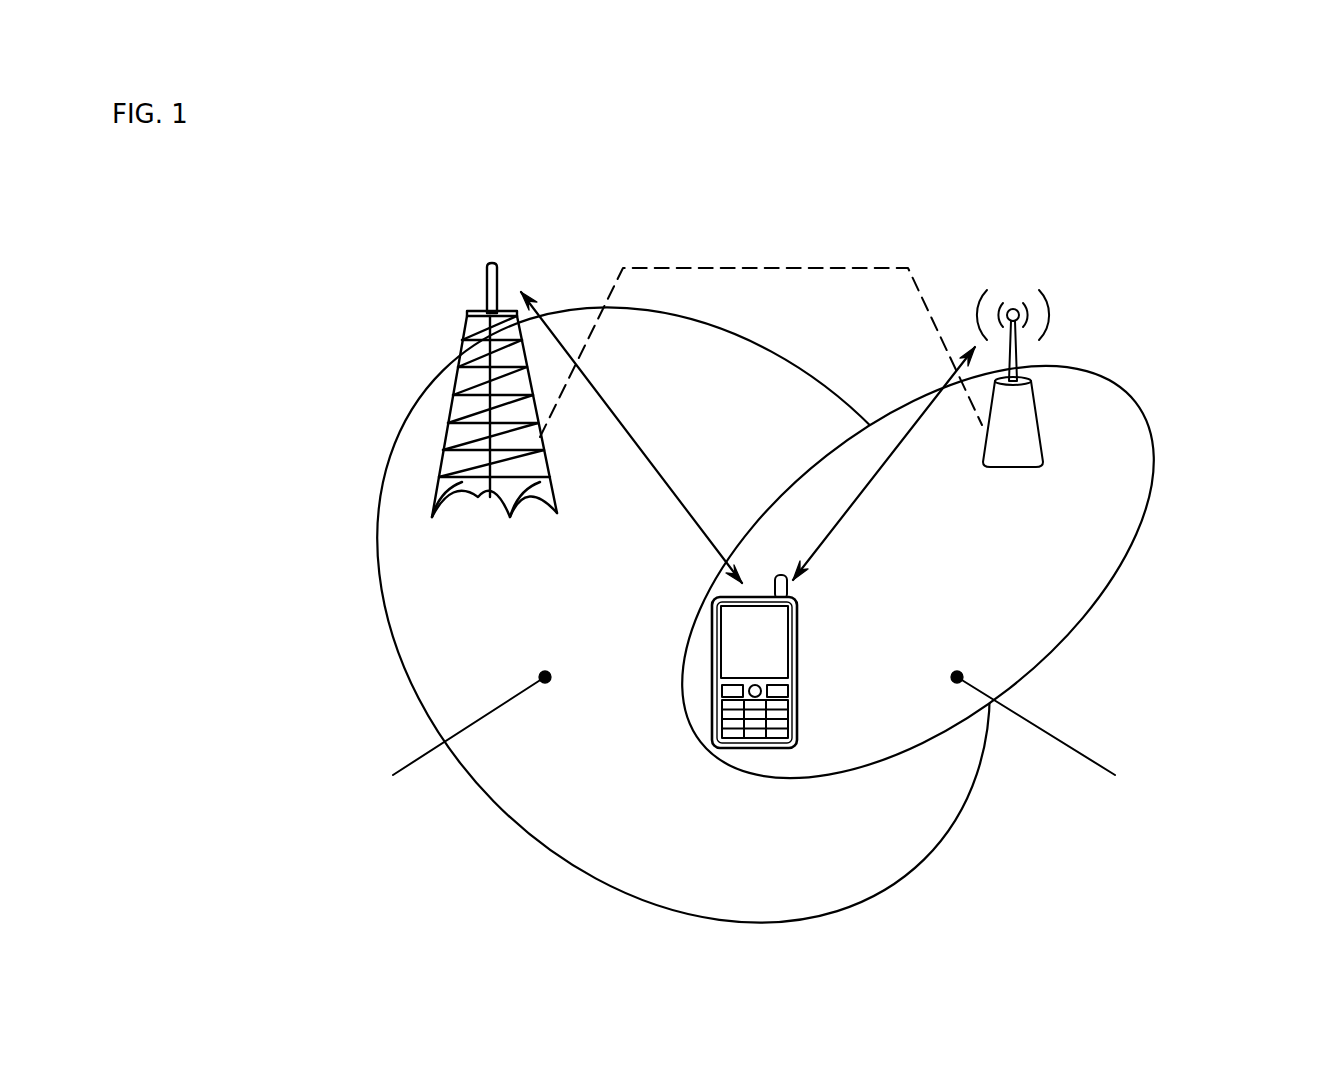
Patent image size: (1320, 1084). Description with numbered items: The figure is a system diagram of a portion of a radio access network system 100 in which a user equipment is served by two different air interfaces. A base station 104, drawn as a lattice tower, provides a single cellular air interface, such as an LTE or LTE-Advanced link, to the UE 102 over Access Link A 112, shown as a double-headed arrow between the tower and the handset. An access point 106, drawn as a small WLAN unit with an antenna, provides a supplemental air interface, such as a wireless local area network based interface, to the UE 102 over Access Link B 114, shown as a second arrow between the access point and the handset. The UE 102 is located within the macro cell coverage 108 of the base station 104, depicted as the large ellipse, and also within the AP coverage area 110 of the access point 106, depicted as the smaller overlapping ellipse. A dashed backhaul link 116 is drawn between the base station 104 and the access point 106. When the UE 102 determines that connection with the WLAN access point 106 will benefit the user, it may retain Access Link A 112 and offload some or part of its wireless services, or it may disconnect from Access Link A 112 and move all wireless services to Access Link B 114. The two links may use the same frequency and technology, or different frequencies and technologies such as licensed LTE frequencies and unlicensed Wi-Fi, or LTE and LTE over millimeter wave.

The radio access network system 100 is at (1085, 144).
The UE 102 is at (797, 647).
The base station 104 is at (450, 415).
The access point 106 is at (1040, 427).
The macro cell coverage 108 is at (393, 643).
The AP coverage area 110 is at (1133, 557).
The access link A 112 is at (642, 450).
The access link B 114 is at (845, 513).
The backhaul link 116 is at (850, 267).